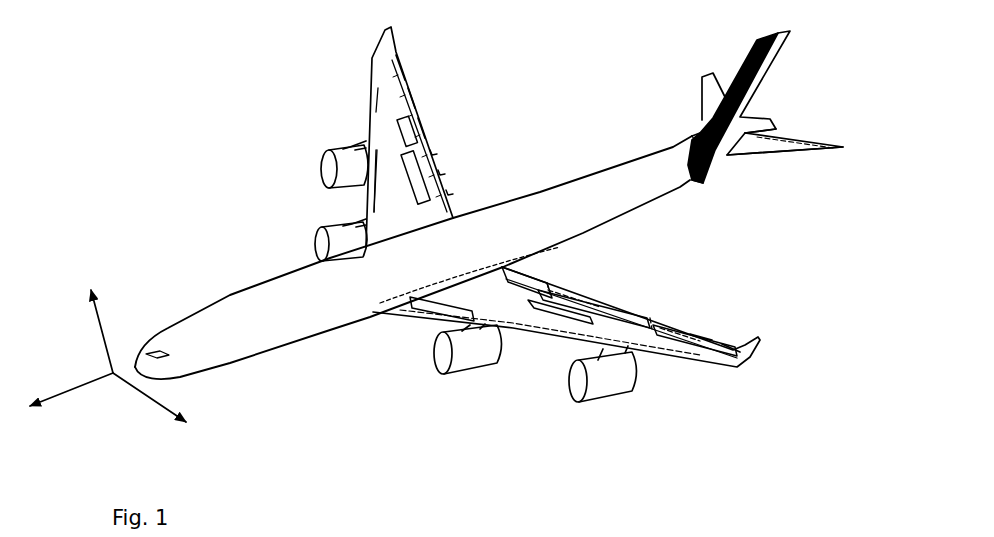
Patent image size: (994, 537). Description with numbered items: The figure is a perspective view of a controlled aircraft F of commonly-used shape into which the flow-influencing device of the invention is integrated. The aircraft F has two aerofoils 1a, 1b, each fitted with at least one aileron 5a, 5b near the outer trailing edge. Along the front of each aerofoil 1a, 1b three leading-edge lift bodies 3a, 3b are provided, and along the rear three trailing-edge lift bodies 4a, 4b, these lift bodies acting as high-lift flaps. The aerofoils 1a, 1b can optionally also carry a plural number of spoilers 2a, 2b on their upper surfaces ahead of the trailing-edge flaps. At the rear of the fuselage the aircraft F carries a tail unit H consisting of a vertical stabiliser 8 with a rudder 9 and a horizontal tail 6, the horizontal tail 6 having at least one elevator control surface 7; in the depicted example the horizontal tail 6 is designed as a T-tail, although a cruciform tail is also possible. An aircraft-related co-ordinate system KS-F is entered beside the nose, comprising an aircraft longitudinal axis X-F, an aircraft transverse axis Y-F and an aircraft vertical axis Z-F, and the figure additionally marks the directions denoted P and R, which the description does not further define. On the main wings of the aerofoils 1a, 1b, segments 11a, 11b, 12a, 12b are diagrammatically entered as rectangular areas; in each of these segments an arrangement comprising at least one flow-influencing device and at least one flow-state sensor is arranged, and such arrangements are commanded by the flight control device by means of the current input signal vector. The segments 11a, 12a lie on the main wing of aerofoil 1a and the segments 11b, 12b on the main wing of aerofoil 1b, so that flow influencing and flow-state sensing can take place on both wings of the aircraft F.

The aerofoil 1a is at (368, 70).
The aerofoil 1b is at (693, 355).
The spoiler 2a is at (433, 167).
The spoiler 2b is at (533, 278).
The leading-edge lift body 3a is at (368, 98).
The leading-edge lift body 3b is at (562, 342).
The trailing-edge lift body 4a is at (421, 135).
The trailing-edge lift body 4b is at (628, 318).
The aileron 5a is at (404, 66).
The aileron 5b is at (687, 328).
The horizontal tail 6 is at (780, 150).
The elevator control surface 7 is at (803, 136).
The vertical stabiliser 8 is at (757, 40).
The rudder 9 is at (793, 46).
The segment 11a is at (412, 185).
The segment 11b is at (545, 308).
The segment 12a is at (400, 135).
The segment 12b is at (582, 340).
The aircraft F is at (242, 228).
The co-ordinate system KS-F is at (108, 315).
The aircraft longitudinal axis X-F is at (71, 404).
The aircraft transverse axis Y-F is at (149, 404).
The aircraft vertical axis Z-F is at (116, 328).
The tail unit H is at (786, 101).
The pitch direction P is at (726, 170).
The roll direction R is at (698, 228).